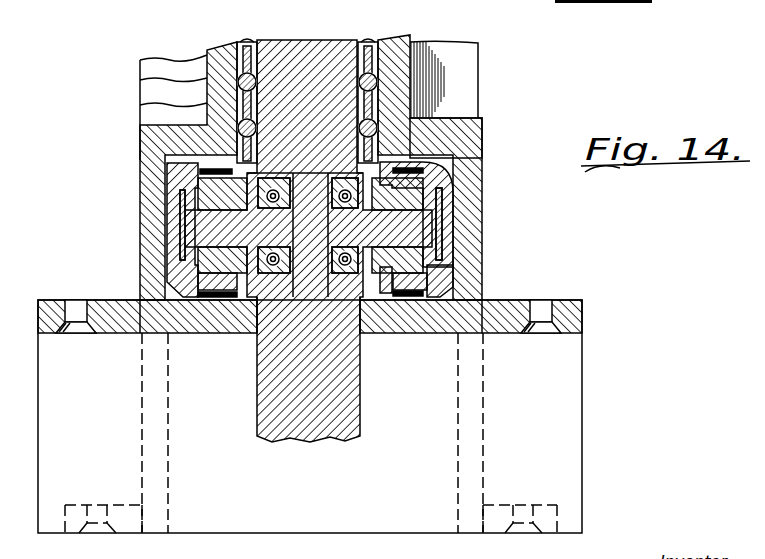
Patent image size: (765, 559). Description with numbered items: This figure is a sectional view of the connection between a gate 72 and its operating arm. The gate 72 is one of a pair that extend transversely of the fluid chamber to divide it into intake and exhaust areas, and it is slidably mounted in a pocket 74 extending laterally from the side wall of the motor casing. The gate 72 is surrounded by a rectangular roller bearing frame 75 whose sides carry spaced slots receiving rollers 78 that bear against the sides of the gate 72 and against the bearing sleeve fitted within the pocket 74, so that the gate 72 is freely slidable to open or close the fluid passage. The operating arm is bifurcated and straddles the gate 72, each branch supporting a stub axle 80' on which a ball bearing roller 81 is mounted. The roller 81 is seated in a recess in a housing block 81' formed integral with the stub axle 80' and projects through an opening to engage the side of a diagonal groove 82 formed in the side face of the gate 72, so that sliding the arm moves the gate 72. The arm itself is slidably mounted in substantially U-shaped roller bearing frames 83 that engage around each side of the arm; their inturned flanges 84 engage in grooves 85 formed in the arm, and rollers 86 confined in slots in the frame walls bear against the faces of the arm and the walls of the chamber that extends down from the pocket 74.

The gate 72 is at (300, 50).
The pocket 74 is at (240, 93).
The roller bearing frame 75 is at (382, 66).
The roller 78 is at (240, 122).
The stub axle 80' is at (445, 229).
The ball bearing roller 81 is at (306, 339).
The housing block 81' is at (115, 149).
The diagonal groove 82 is at (435, 145).
The roller bearing frame 83 is at (165, 180).
The inturned flange 84 is at (195, 264).
The groove 85 is at (180, 210).
The roller 86 is at (450, 247).